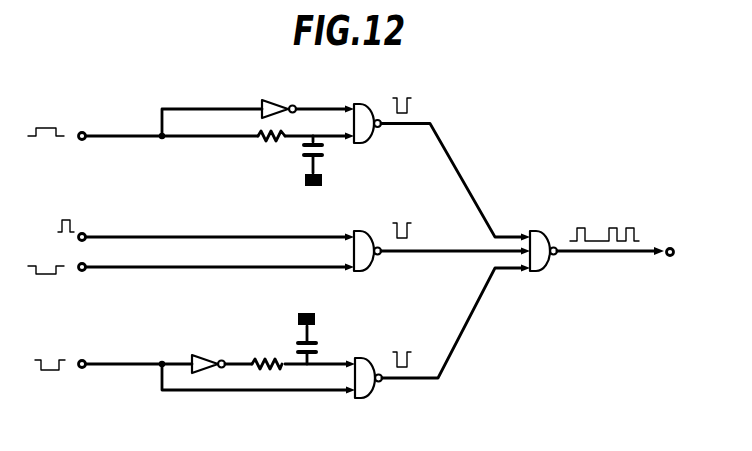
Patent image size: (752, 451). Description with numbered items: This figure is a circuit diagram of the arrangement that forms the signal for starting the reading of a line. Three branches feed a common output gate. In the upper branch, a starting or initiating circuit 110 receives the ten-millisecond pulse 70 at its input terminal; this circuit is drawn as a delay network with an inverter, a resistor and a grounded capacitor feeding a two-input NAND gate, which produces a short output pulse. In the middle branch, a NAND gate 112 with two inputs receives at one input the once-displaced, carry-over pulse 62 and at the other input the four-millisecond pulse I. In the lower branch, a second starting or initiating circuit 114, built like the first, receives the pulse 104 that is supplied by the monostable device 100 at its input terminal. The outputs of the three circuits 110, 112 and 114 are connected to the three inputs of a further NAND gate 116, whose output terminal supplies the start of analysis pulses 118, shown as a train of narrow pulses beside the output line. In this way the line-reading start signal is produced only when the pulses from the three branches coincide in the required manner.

The 10 ms pulse 70 is at (45, 126).
The starting or initiating circuit 110 is at (267, 83).
The once-displaced, carry-over pulse 62 is at (59, 219).
The 4 ms pulse I is at (45, 267).
The NAND gate 112 is at (366, 262).
The monostable device 100 is at (83, 359).
The pulse 104 is at (54, 370).
The second starting or initiating circuit 114 is at (246, 407).
The NAND gate 116 is at (545, 265).
The start of analysis pulses 118 is at (612, 222).